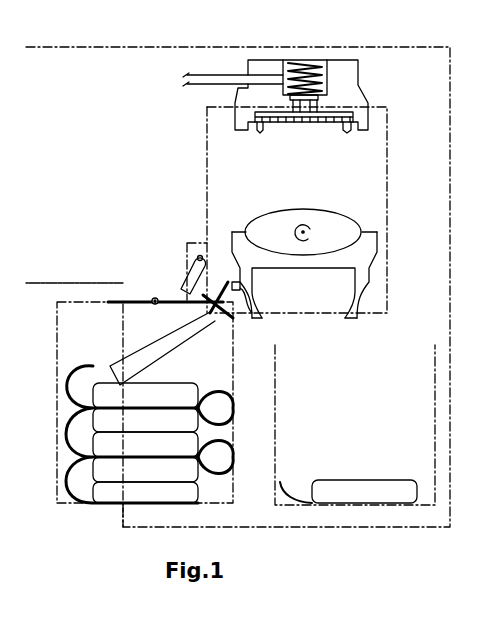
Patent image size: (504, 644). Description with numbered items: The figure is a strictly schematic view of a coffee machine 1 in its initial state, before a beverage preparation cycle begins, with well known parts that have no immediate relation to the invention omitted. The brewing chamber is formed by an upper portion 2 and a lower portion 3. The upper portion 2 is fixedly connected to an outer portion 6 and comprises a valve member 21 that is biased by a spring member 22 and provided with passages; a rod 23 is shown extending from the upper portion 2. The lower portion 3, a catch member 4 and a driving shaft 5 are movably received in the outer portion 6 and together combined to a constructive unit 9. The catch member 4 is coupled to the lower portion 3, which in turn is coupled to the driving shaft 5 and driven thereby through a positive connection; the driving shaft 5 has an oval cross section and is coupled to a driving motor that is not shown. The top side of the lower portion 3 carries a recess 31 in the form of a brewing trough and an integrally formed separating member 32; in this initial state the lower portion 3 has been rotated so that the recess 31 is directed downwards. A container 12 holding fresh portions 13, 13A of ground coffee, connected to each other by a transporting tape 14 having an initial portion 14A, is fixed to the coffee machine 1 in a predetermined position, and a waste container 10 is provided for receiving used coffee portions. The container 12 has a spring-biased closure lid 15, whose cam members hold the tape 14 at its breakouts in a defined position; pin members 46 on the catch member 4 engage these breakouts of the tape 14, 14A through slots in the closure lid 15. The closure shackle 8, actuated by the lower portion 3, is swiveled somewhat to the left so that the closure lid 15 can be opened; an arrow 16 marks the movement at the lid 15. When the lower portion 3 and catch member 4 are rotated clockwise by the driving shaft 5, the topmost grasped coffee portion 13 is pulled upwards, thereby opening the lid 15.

The coffee machine 1 is at (310, 527).
The upper portion of the brewing chamber 2 is at (350, 90).
The lower portion of the brewing chamber 3 is at (368, 247).
The catch member 4 is at (228, 276).
The driving shaft 5 is at (276, 236).
The outer portion 6 is at (386, 176).
The closure shackle 8 is at (184, 268).
The constructive unit 9 is at (205, 172).
The waste container 10 is at (277, 417).
The container 12 is at (72, 300).
The fresh portion of coffee powder 13 is at (168, 352).
The fresh portion of coffee powder 13A is at (170, 390).
The transporting tape 14 is at (70, 365).
The initial portion of the transporting tape 14A is at (220, 320).
The closure lid 15 is at (176, 296).
The lever movement direction 16 is at (195, 305).
The valve member 21 is at (322, 124).
The spring member 22 is at (296, 62).
The push rod 23 is at (194, 80).
The recess 31 is at (295, 287).
The separating member 32 is at (370, 302).
The pin members 46 is at (236, 298).